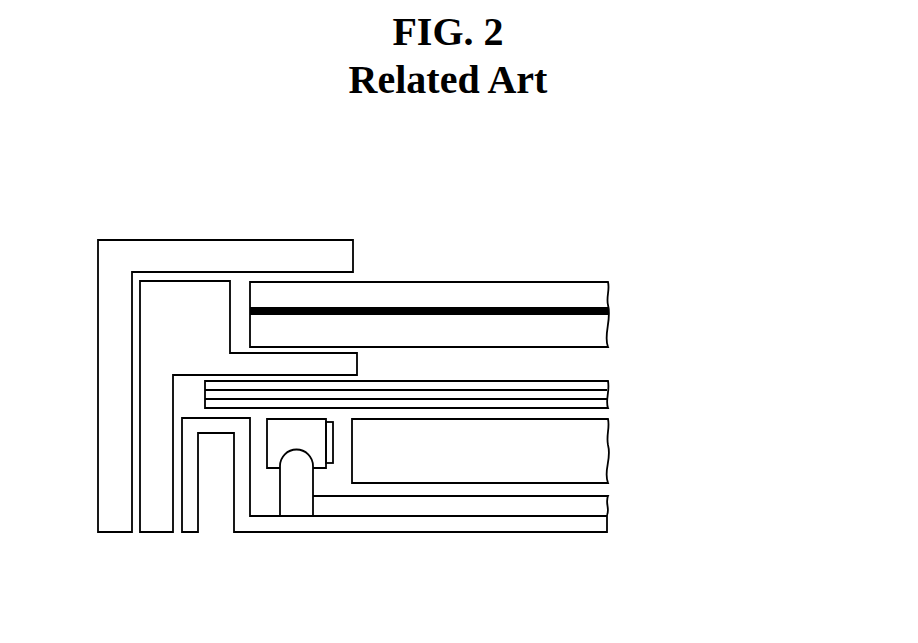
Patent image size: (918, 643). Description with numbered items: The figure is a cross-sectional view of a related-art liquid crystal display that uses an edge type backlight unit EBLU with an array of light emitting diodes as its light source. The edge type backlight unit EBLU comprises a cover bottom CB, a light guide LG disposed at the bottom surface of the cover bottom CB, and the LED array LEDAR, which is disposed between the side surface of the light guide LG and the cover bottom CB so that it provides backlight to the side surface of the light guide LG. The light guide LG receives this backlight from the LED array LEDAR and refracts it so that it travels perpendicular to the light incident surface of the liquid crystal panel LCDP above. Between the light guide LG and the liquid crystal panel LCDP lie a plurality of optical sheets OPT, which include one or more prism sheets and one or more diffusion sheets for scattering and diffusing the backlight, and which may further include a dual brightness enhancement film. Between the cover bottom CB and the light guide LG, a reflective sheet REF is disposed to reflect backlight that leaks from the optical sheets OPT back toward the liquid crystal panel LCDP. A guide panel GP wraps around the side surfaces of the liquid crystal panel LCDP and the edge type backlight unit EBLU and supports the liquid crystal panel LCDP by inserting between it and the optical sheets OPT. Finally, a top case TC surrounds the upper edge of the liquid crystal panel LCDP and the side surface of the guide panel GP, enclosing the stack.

The top case TC is at (285, 248).
The guide panel GP is at (178, 300).
The liquid crystal panel LCDP is at (622, 305).
The optical sheets OPT is at (622, 393).
The light guide LG is at (597, 453).
The reflective sheet REF is at (597, 507).
The cover bottom CB is at (592, 524).
The LED array LEDAR is at (320, 458).
The edge type backlight unit EBLU is at (733, 380).